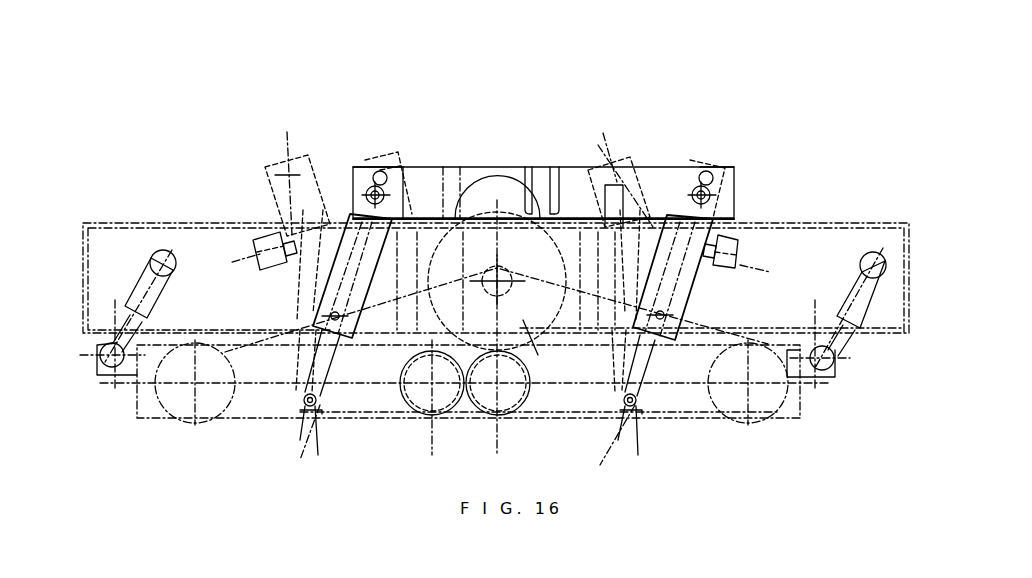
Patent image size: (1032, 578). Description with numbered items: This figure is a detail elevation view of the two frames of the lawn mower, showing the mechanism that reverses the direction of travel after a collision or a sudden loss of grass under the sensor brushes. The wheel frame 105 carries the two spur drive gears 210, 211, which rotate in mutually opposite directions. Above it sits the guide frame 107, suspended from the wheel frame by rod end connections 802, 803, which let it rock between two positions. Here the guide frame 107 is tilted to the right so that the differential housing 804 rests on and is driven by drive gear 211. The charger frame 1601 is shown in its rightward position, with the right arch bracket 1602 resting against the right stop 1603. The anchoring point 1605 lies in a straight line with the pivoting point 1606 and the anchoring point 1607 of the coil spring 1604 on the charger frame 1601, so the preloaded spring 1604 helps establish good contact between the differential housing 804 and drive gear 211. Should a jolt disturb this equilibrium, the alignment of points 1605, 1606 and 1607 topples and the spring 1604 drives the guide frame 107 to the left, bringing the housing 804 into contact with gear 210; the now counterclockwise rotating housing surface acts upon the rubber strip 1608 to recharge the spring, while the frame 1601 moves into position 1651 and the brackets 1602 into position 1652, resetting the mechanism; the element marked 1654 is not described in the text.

The frame 105 is at (143, 420).
The guide frame 107 is at (909, 287).
The spur drive gear 210 is at (425, 402).
The spur drive gear 211 is at (493, 418).
The rod end connection 802 is at (838, 352).
The rod end connection 803 is at (117, 343).
The differential housing 804 is at (538, 355).
The charger frame 1601 is at (545, 180).
The right arch bracket 1602 is at (373, 160).
The right stop 1603 is at (735, 240).
The coil spring 1604 is at (312, 340).
The anchoring point 1605 is at (318, 400).
The pivoting point 1606 is at (335, 320).
The anchoring point 1607 is at (392, 168).
The rubber strip 1608 is at (557, 178).
The position of charger frame 1651 is at (480, 185).
The position of arch brackets 1652 is at (303, 155).
The pivot block 1654 is at (290, 270).